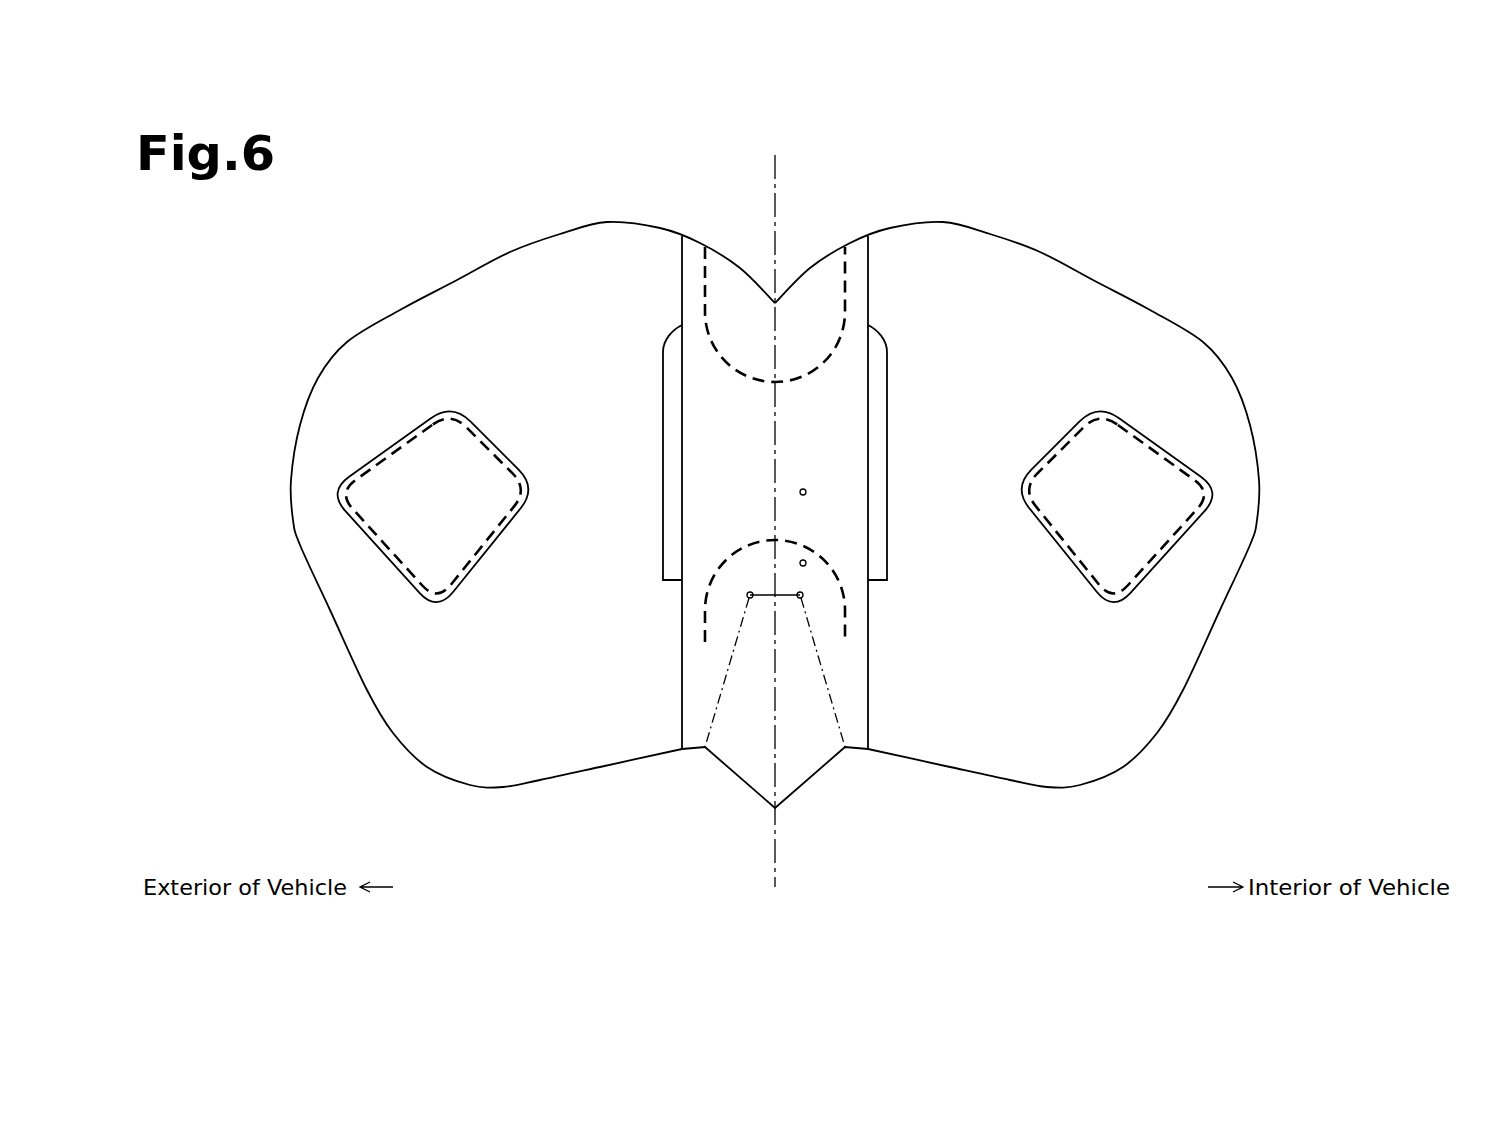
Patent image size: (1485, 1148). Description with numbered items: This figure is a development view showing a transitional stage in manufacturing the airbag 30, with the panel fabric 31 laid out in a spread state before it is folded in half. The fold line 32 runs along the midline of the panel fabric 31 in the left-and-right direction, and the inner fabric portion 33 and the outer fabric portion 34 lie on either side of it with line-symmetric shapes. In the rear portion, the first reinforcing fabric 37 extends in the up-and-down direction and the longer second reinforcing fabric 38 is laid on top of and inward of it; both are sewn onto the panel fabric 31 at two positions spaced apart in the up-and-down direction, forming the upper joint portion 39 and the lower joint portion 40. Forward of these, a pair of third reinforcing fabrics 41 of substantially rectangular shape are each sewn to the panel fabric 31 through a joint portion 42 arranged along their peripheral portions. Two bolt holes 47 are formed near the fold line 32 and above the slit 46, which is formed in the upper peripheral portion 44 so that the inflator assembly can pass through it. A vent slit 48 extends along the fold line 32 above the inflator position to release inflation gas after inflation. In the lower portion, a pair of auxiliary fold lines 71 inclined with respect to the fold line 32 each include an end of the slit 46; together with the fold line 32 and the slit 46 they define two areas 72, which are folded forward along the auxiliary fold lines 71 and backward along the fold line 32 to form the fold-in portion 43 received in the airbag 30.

The airbag 30 is at (775, 475).
The panel fabric 31 is at (1017, 505).
The fold line 32 is at (777, 186).
The inner fabric portion 33 is at (1093, 291).
The outer fabric portion 34 is at (458, 286).
The first reinforcing fabric 37 is at (887, 377).
The second reinforcing fabric 38 is at (868, 302).
The upper joint portion 39 is at (847, 272).
The lower joint portion 40 is at (846, 616).
The third reinforcing fabric 41 is at (468, 413).
The joint portion 42 is at (487, 437).
The fold-in portion 43 is at (812, 782).
The upper peripheral portion 44 is at (775, 669).
The slit 46 is at (768, 600).
The bolt hole 47 is at (803, 496).
The vent slit 48 is at (777, 412).
The auxiliary fold line 71 is at (715, 704).
The area 72 is at (776, 728).